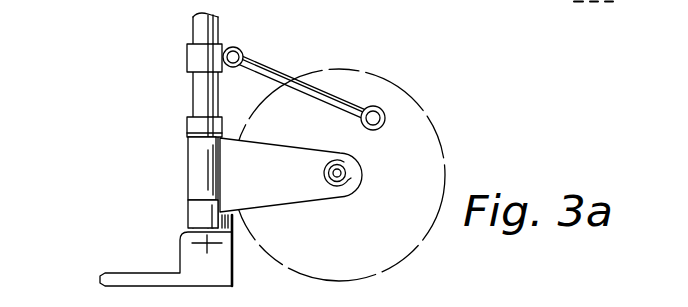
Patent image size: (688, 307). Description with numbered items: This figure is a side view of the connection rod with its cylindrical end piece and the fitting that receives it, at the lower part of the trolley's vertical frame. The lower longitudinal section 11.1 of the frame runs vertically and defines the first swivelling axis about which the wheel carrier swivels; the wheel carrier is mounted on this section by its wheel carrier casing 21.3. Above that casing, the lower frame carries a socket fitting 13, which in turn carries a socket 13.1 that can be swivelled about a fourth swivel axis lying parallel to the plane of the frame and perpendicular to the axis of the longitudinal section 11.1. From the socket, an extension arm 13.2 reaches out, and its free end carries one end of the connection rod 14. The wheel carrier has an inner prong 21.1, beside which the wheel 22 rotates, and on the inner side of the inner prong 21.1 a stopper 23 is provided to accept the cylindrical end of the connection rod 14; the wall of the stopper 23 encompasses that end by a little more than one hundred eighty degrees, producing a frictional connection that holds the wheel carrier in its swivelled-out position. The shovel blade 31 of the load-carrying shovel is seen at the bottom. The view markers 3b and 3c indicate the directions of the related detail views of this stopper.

The lower longitudinal section 11.1 is at (220, 26).
The socket fitting 13 is at (187, 58).
The socket 13.1 is at (243, 50).
The extension arm 13.2 is at (315, 82).
The connection rod 14 is at (383, 109).
The inner prong 21.1 is at (277, 205).
The wheel carrier casing 21.3 is at (188, 143).
The wheel 22 is at (446, 161).
The stopper 23 is at (350, 183).
The shovel blade 31 is at (133, 282).
The direction arrow 3b is at (367, 140).
The direction arrow 3c is at (377, 206).